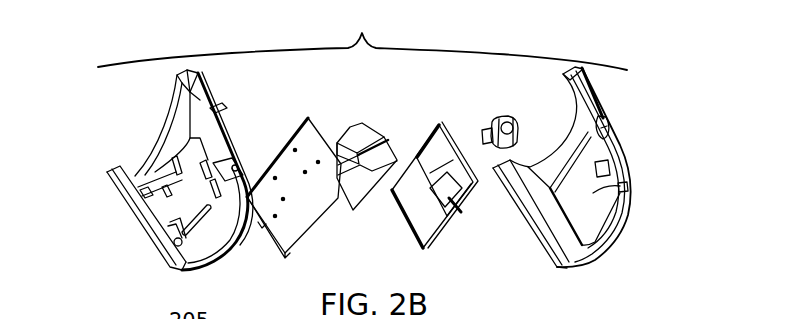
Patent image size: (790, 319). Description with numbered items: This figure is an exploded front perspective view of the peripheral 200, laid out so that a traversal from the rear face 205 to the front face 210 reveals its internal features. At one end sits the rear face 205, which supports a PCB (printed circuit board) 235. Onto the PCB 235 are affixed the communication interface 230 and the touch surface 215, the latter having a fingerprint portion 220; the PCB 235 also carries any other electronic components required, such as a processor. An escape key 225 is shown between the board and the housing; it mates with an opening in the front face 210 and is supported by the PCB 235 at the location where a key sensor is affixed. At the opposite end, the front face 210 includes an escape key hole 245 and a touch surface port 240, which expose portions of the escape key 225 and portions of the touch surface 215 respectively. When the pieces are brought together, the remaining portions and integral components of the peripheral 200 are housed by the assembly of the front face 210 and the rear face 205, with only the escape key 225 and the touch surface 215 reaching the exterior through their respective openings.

The peripheral 200 is at (362, 39).
The rear face 205 is at (165, 142).
The front face 210 is at (623, 227).
The touch surface 215 is at (415, 235).
The fingerprint portion 220 is at (455, 211).
The escape key 225 is at (502, 115).
The communication interface 230 is at (368, 123).
The PCB (Printed Circuit Board) 235 is at (283, 151).
The touch surface port 240 is at (628, 187).
The escape key hole 245 is at (607, 122).